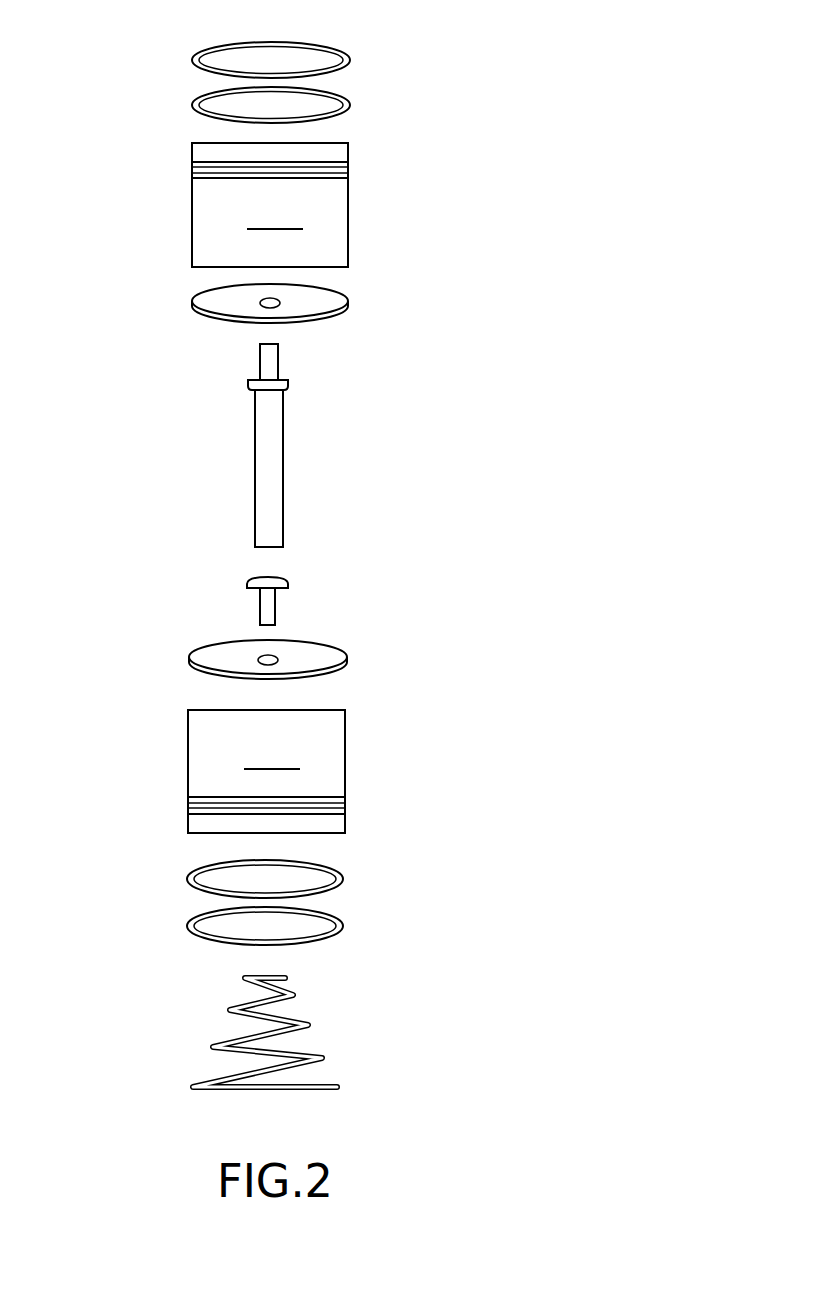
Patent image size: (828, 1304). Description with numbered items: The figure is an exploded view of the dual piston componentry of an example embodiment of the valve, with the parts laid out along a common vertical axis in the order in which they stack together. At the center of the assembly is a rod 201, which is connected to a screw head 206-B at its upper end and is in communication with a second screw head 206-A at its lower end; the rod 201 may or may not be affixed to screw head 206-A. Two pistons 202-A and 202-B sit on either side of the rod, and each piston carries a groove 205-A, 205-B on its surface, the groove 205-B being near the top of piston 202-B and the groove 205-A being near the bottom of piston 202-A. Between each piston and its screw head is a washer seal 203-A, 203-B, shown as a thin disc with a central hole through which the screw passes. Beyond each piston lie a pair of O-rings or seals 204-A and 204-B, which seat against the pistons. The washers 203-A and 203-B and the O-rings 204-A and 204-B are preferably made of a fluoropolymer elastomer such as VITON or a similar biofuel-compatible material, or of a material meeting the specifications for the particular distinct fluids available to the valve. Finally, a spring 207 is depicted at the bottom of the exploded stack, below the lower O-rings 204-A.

The rod 201 is at (255, 458).
The piston 202-A is at (266, 771).
The piston 202-B is at (270, 205).
The washer seal 203-A is at (198, 653).
The washer seal 203-B is at (210, 311).
The O-ring or seal 204-A is at (343, 874).
The O-ring or seal 204-B is at (350, 55).
The groove 205-A is at (345, 800).
The groove 205-B is at (348, 165).
The screw head 206-A is at (286, 581).
The screw head 206-B is at (289, 387).
The spring 207 is at (324, 1057).